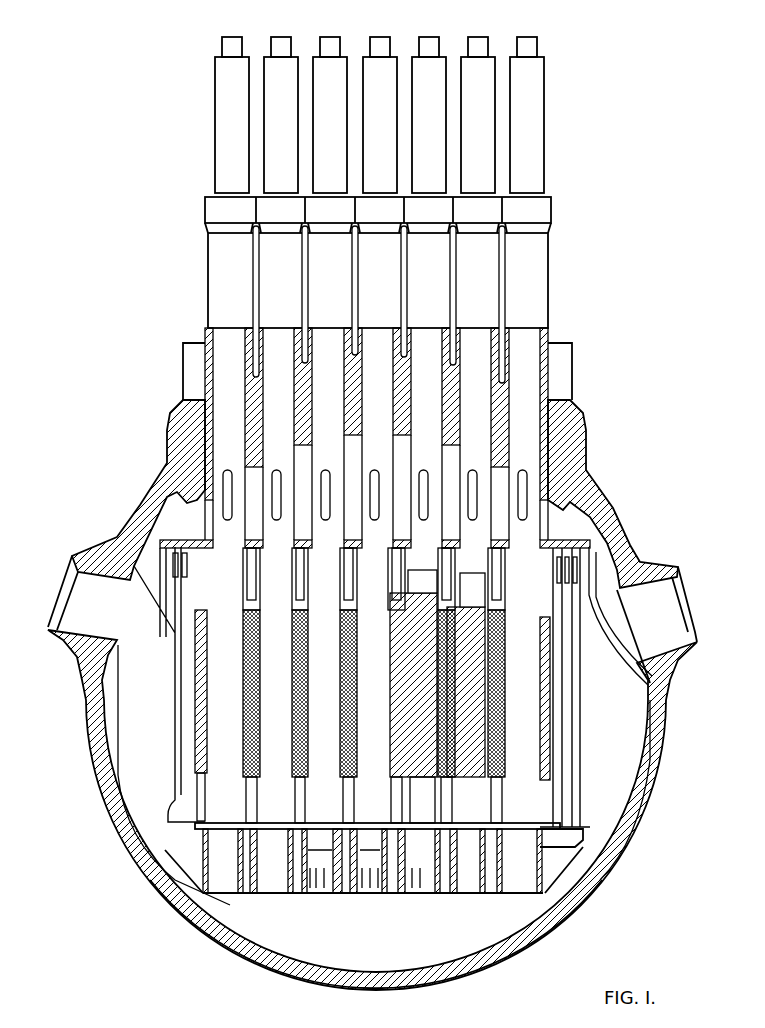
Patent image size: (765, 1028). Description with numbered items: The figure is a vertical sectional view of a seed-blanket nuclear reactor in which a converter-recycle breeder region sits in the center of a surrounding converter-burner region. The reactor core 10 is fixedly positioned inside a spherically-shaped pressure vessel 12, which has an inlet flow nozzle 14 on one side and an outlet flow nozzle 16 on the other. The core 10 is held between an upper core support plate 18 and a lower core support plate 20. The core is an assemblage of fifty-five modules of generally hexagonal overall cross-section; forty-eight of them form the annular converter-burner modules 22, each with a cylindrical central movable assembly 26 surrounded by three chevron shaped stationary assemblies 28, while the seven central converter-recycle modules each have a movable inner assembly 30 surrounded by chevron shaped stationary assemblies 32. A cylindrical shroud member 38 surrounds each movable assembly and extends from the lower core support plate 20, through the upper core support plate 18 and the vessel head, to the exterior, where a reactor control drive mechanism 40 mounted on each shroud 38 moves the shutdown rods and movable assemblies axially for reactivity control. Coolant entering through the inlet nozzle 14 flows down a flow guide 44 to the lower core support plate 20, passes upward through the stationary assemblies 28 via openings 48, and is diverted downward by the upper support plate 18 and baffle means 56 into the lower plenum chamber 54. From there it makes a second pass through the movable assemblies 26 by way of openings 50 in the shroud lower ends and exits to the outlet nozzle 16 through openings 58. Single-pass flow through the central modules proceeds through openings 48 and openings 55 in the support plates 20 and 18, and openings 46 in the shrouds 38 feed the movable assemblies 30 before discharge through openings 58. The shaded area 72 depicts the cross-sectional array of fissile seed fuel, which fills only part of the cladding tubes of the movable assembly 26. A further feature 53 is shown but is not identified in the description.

The reactor core 10 is at (587, 714).
The pressure vessel 12 is at (650, 776).
The inlet flow nozzle 14 is at (62, 584).
The outlet flow nozzle 16 is at (673, 594).
The upper core support plate 18 is at (538, 548).
The lower core support plate 20 is at (586, 832).
The converter-burner modules 22 is at (553, 764).
The central movable assembly 26 is at (478, 782).
The chevron shaped stationary assemblies 28 is at (195, 744).
The movable inner assembly 30 is at (425, 783).
The chevron shaped stationary assemblies 32 is at (395, 589).
The cylindrical shroud member 38 is at (523, 348).
The reactor control drive mechanism 40 is at (518, 67).
The flow guide 44 is at (127, 702).
The openings in shrouds 46 is at (362, 887).
The openings in lower core support plate 48 is at (346, 818).
The openings in lower ends of shrouds 50 is at (470, 887).
The flow openings 53 is at (568, 572).
The lower plenum chamber 54 is at (426, 944).
The openings in upper core support plate 55 is at (393, 544).
The baffle means 56 is at (610, 630).
The openings in shrouds 58 is at (523, 478).
The cross-sectional array of fissile seed fuels 72 is at (480, 732).